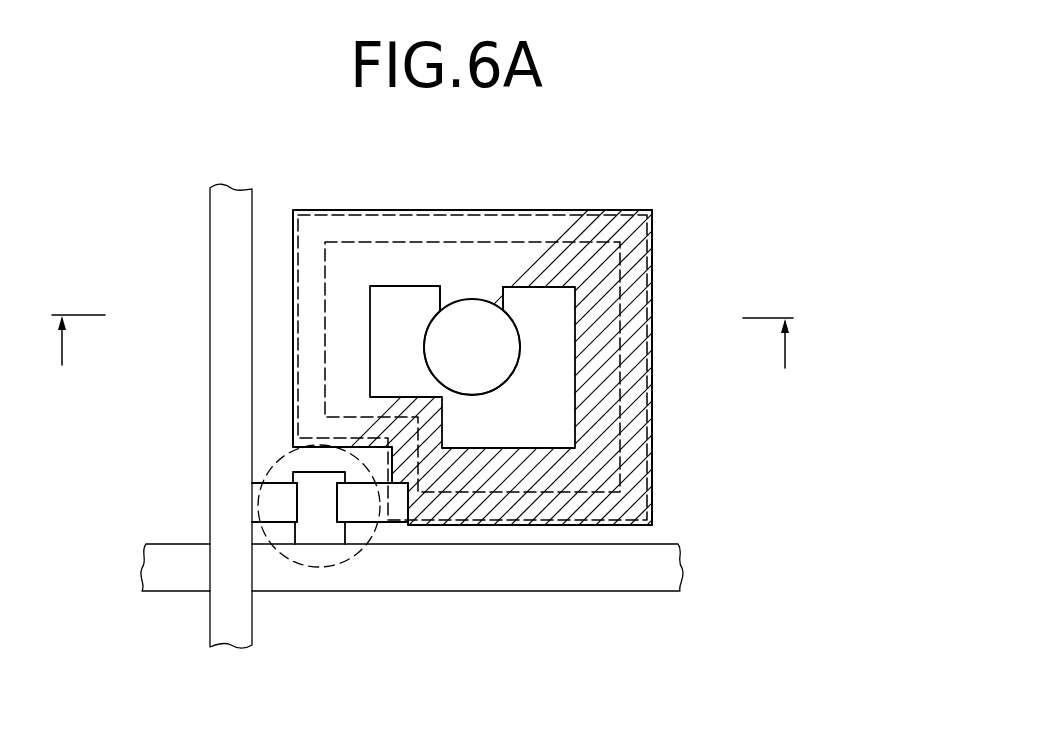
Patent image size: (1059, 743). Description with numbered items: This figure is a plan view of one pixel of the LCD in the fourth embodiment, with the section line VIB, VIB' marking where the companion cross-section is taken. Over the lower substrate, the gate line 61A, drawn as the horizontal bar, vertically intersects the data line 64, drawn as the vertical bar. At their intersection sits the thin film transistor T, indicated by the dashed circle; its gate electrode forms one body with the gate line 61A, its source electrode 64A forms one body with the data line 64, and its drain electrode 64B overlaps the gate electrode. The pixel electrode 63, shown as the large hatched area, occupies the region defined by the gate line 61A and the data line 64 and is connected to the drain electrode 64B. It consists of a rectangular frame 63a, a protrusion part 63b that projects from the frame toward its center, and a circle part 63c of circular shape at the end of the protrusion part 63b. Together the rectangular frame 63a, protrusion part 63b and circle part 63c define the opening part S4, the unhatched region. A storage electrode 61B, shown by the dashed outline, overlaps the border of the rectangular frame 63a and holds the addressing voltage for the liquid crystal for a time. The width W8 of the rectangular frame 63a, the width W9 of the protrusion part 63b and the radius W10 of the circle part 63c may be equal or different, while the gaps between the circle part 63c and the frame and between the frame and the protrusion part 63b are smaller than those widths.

The gate line 61A is at (617, 585).
The storage electrode 61B is at (642, 468).
The pixel electrode 63 is at (483, 208).
The rectangular frame 63a is at (652, 209).
The protrusion part 63b is at (487, 272).
The circle part 63c is at (498, 327).
The data line 64 is at (212, 382).
The source electrode 64A is at (270, 515).
The drain electrode 64B is at (363, 515).
The opening part S4 is at (378, 317).
The thin film transistor T is at (322, 570).
The width of the rectangular frame W8 is at (368, 365).
The width of the protrusion part W9 is at (502, 306).
The radius of the circle part W10 is at (472, 349).
The section line VIB is at (71, 359).
The section line VIB' is at (777, 362).